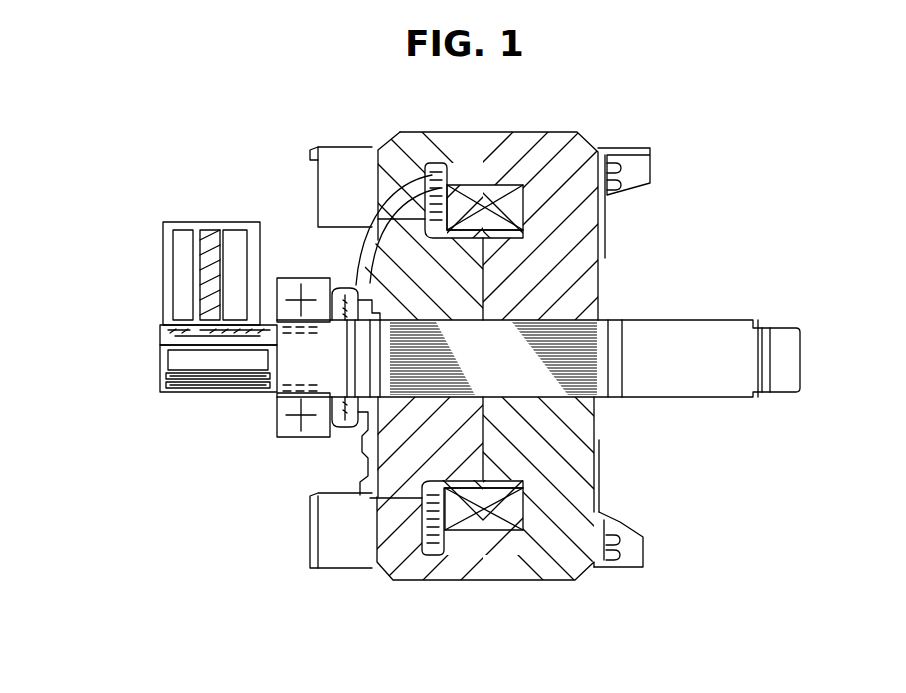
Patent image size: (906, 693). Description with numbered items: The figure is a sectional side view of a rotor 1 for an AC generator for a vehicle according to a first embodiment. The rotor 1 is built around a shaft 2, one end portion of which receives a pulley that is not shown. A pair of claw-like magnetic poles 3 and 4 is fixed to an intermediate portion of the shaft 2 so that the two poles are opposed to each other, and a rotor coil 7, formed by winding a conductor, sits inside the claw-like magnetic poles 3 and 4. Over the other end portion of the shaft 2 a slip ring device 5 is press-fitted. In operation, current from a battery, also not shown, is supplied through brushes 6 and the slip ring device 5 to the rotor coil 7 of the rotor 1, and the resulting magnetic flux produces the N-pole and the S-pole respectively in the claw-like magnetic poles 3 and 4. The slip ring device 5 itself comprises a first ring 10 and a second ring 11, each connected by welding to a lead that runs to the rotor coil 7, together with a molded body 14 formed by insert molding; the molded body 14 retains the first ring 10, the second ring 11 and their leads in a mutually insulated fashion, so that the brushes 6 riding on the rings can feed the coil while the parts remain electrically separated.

The rotor 1 is at (605, 133).
The shaft 2 is at (672, 330).
The claw-like magnetic pole 3 is at (405, 478).
The claw-like magnetic pole 4 is at (510, 514).
The slip ring device 5 is at (205, 400).
The brushes 6 is at (185, 222).
The rotor coil 7 is at (578, 557).
The first ring 10 is at (187, 392).
The second ring 11 is at (227, 392).
The molded body 14 is at (163, 338).